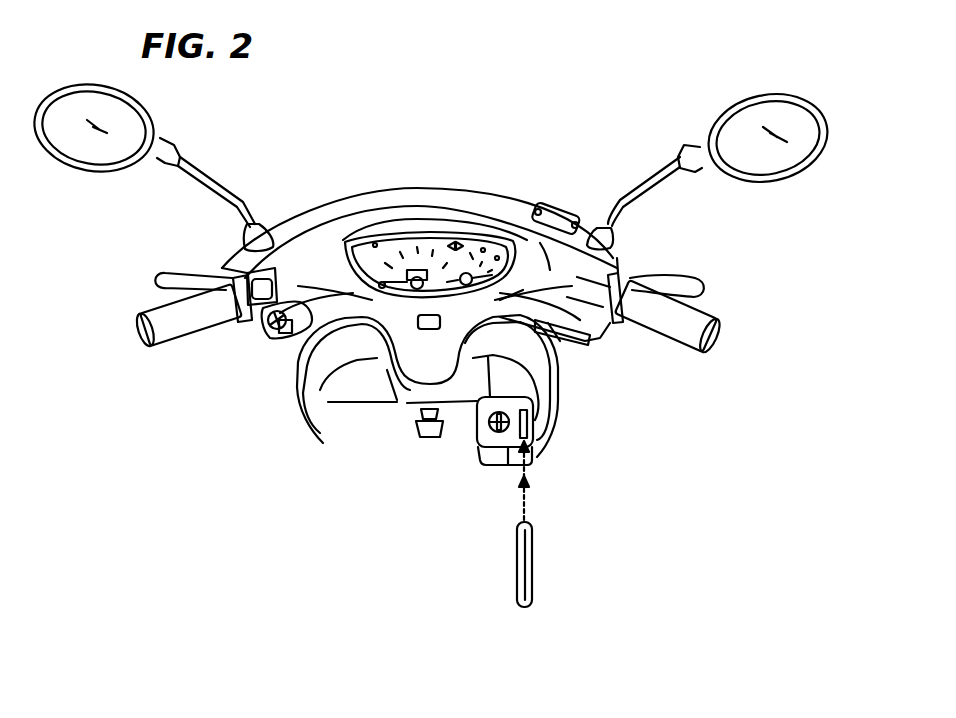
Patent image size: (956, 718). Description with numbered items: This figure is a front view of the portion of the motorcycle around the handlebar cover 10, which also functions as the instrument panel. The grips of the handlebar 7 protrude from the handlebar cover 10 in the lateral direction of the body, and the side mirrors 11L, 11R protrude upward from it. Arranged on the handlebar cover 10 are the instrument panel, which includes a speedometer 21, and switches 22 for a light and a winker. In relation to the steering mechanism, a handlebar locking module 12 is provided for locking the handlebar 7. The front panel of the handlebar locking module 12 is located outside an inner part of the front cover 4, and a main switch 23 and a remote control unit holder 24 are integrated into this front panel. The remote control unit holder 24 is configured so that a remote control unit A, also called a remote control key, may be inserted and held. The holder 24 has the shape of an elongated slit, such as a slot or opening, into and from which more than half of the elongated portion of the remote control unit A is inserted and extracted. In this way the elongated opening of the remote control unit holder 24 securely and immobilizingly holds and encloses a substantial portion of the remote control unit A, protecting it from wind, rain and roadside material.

The front cover 4 is at (313, 420).
The handlebar 7 is at (708, 313).
The handlebar cover 10 is at (292, 257).
The left side mirror 11L is at (82, 150).
The right side mirror 11R is at (775, 152).
The handlebar locking module 12 is at (504, 466).
The speedometer 21 is at (478, 247).
The switches 22 is at (251, 329).
The main switch 23 is at (478, 433).
The remote control unit holder 24 is at (534, 419).
The remote control unit A is at (533, 557).